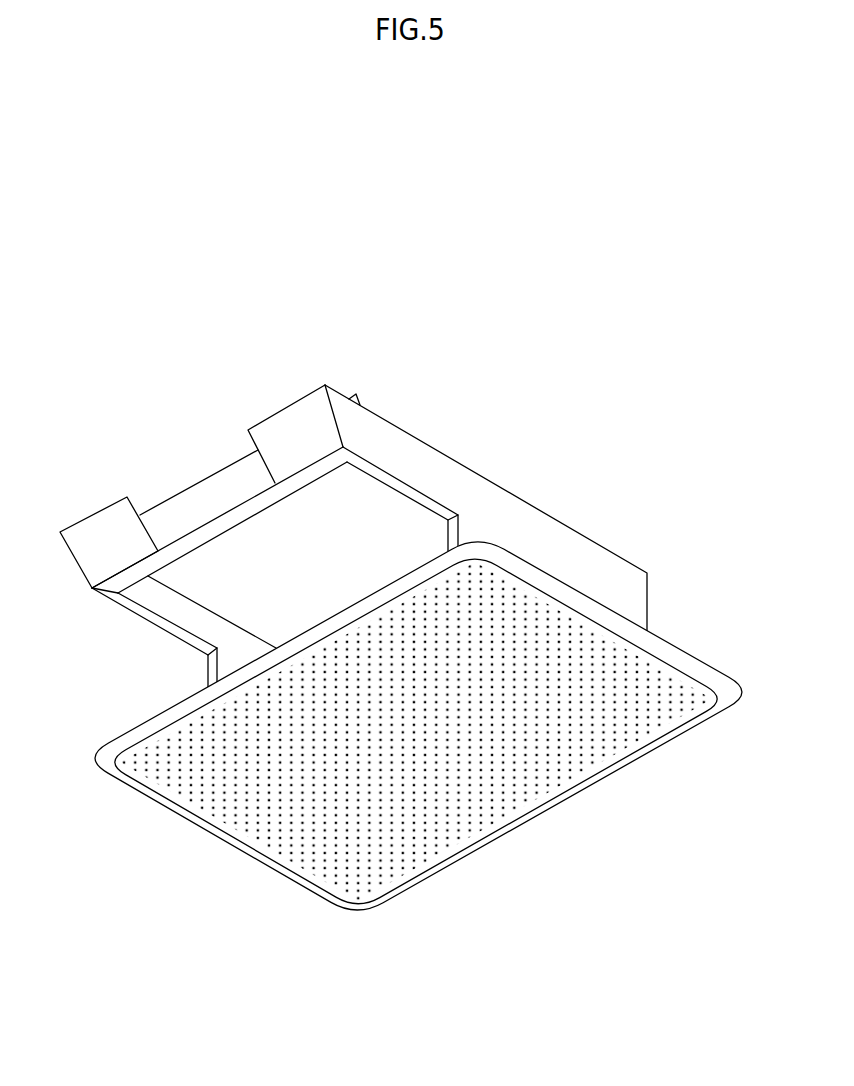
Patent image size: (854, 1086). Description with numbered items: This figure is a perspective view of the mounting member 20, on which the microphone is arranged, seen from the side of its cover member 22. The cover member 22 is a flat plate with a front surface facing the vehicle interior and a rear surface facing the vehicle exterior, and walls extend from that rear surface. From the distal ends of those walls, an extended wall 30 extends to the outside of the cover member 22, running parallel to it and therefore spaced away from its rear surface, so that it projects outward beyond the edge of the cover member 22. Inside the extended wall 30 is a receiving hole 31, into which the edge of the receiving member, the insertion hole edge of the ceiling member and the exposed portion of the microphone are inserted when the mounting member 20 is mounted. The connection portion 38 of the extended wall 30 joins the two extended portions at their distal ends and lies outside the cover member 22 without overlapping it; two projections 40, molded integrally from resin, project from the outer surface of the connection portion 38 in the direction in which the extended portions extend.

The mounting member 20 is at (391, 617).
The cover member 22 is at (598, 725).
The extended wall 30 is at (343, 503).
The receiving hole 31 is at (396, 491).
The connection portion 38 is at (228, 495).
The projections 40 is at (97, 543).